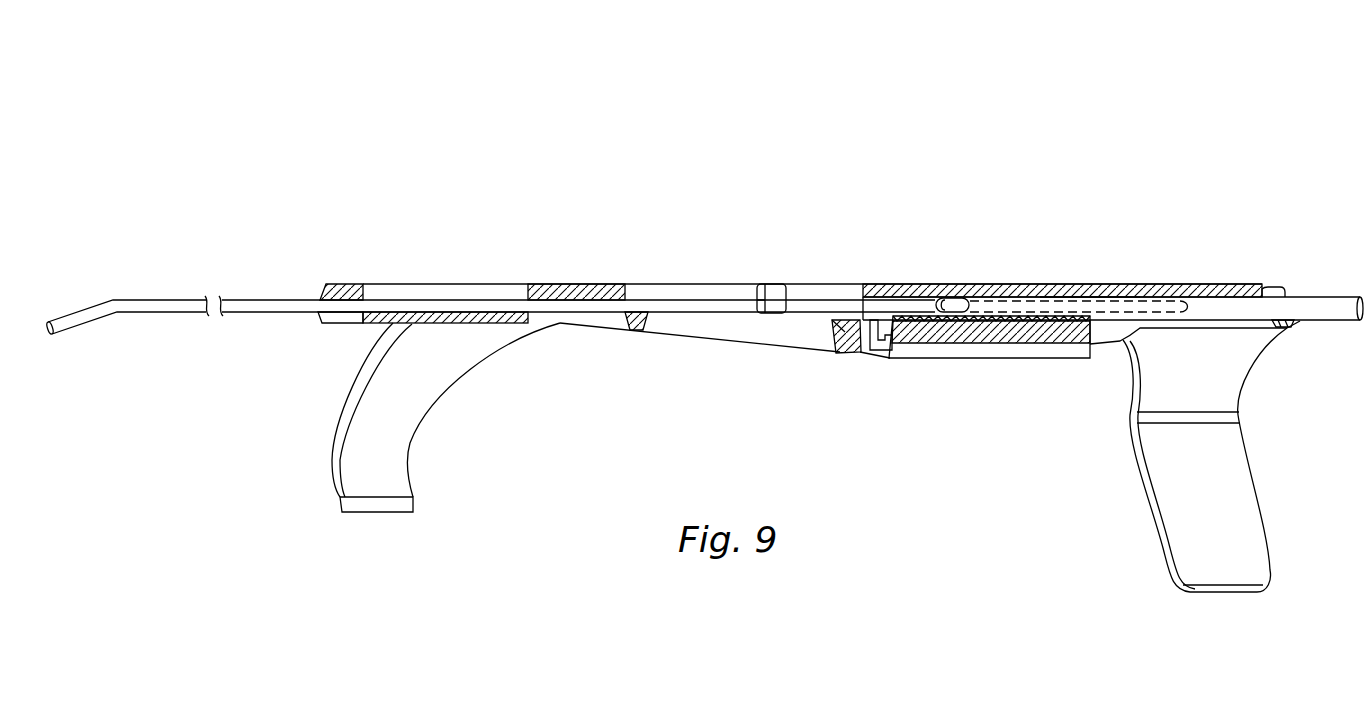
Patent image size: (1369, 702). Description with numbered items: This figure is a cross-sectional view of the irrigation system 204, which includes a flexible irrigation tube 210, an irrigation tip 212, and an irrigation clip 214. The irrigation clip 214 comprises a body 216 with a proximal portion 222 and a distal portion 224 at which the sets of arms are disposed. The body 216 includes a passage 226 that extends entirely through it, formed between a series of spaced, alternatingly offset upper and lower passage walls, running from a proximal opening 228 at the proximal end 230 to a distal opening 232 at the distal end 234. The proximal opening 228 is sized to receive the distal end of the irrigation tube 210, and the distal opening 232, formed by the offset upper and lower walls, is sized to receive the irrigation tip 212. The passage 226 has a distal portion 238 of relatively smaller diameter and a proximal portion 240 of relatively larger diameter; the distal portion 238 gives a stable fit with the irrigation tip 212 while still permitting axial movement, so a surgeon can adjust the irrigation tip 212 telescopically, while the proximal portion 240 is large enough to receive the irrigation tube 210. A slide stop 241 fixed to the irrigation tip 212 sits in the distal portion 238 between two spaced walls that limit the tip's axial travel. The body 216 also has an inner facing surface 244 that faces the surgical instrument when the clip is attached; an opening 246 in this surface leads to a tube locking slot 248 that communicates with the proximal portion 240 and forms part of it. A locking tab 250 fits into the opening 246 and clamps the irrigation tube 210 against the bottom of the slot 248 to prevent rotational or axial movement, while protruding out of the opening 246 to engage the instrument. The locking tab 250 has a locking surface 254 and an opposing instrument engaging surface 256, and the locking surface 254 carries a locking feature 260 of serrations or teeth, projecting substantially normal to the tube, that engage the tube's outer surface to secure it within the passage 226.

The irrigation system 204 is at (426, 80).
The flexible irrigation tube 210 is at (1335, 296).
The irrigation tip 212 is at (150, 298).
The irrigation clip 214 is at (498, 273).
The body 216 is at (740, 338).
The proximal portion 222 is at (393, 262).
The distal portion 224 is at (1201, 262).
The passage 226 is at (536, 324).
The proximal opening 228 is at (1292, 323).
The proximal end 230 is at (1280, 287).
The distal opening 232 is at (340, 318).
The distal end 234 is at (321, 292).
The distal portion 238 is at (626, 332).
The proximal portion 240 is at (1087, 301).
The slide stop 241 is at (790, 285).
The inner facing surface 244 is at (852, 357).
The opening 246 is at (1108, 350).
The tube locking slot 248 is at (870, 354).
The locking tab 250 is at (1003, 353).
The locking surface 254 is at (937, 301).
The instrument engaging surface 256 is at (937, 360).
The locking feature 260 is at (1028, 302).